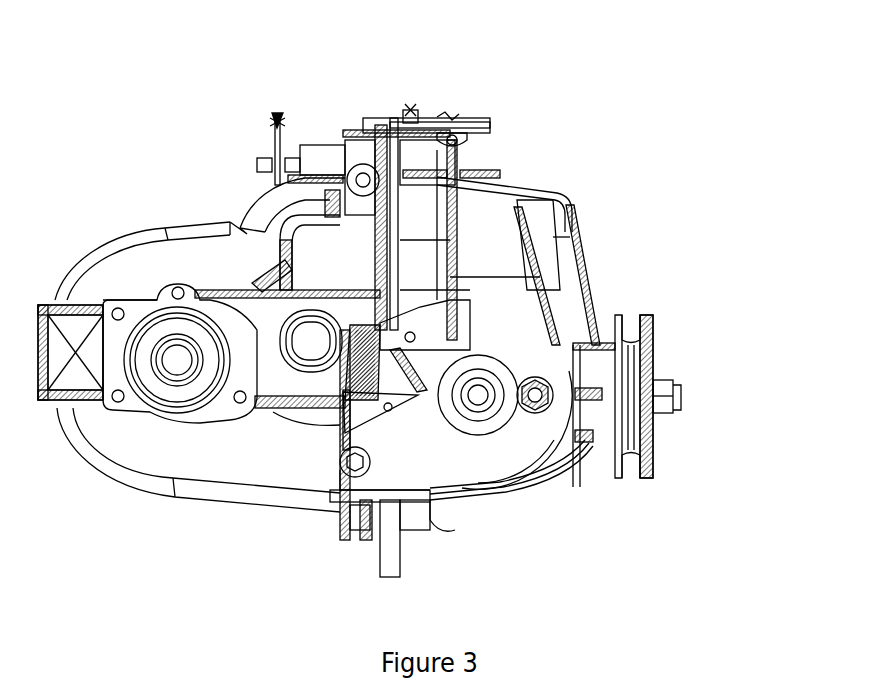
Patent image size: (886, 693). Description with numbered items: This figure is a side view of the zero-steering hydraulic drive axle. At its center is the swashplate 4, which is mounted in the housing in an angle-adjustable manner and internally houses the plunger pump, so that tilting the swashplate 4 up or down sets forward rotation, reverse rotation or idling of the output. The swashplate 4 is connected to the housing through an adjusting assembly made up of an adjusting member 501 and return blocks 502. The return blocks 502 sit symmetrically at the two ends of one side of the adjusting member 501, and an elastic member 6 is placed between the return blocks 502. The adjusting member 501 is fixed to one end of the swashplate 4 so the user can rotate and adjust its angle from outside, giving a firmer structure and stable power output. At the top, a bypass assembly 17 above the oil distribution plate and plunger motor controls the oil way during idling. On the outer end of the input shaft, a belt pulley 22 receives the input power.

The swashplate 4 is at (209, 315).
The bypass assembly 17 is at (499, 78).
The return blocks 502 is at (599, 296).
The elastic member 6 is at (366, 364).
The belt pulley 22 is at (709, 405).
The adjusting member 501 is at (477, 515).